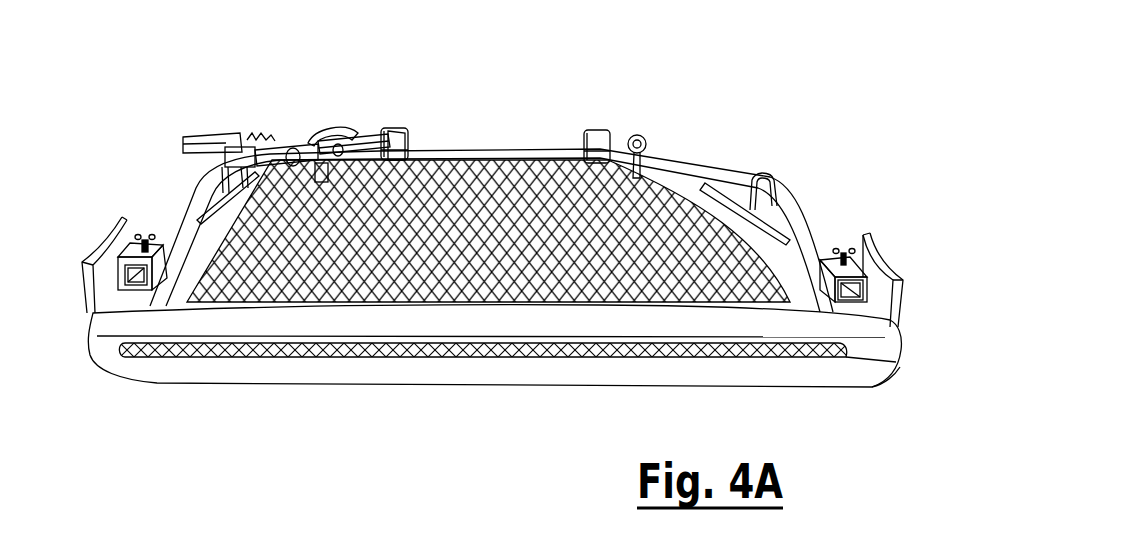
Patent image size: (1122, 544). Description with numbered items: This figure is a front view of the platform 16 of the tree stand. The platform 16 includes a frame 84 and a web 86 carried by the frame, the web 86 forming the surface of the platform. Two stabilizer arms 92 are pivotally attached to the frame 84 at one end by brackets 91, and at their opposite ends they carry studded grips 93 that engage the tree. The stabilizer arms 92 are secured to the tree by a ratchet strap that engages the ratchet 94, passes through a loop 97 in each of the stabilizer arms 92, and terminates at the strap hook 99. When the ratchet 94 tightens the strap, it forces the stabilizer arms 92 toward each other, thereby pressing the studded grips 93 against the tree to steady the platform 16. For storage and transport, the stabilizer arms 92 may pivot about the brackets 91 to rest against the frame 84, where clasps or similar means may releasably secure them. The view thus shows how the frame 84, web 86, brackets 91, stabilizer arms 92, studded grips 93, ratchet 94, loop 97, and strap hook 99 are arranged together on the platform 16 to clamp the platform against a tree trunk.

The platform 16 is at (741, 116).
The frame 84 is at (447, 371).
The web 86 is at (457, 177).
The brackets 91 is at (394, 128).
The stabilizer arms 92 is at (171, 208).
The studded grips 93 is at (103, 240).
The ratchet 94 is at (250, 133).
The loop 97 is at (217, 168).
The strap hook 99 is at (636, 136).